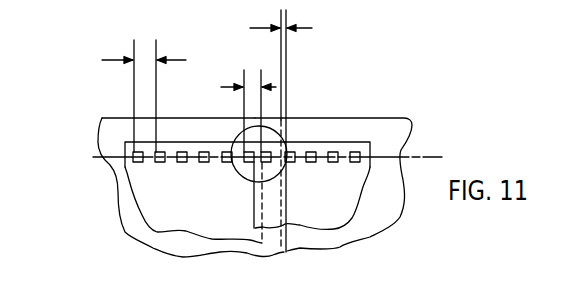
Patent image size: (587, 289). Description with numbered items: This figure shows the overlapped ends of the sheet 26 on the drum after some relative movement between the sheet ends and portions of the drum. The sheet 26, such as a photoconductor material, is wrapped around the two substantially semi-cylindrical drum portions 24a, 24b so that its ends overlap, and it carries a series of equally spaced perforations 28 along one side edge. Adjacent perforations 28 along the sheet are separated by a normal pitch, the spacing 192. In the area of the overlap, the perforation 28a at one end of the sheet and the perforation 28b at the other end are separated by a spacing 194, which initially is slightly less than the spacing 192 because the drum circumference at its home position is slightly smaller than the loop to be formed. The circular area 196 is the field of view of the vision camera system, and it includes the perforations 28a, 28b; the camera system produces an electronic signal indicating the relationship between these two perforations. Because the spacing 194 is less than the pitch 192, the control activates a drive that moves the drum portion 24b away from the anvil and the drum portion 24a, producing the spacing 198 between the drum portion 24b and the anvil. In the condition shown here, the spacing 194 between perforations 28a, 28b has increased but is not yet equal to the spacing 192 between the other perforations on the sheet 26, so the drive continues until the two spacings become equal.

The spacing between adjacent perforations 192 is at (106, 60).
The spacing between perforations at the overlapped ends 194 is at (227, 87).
The field of view 196 is at (238, 132).
The spacing between anvil and drum portion 198 is at (307, 28).
The perforations 28 is at (356, 150).
The perforation at one end of the sheet 28a is at (246, 176).
The perforation at the other end of the sheet 28b is at (266, 176).
The sheet 26 is at (168, 205).
The drum portion 24a is at (135, 232).
The drum portion 24b is at (345, 237).